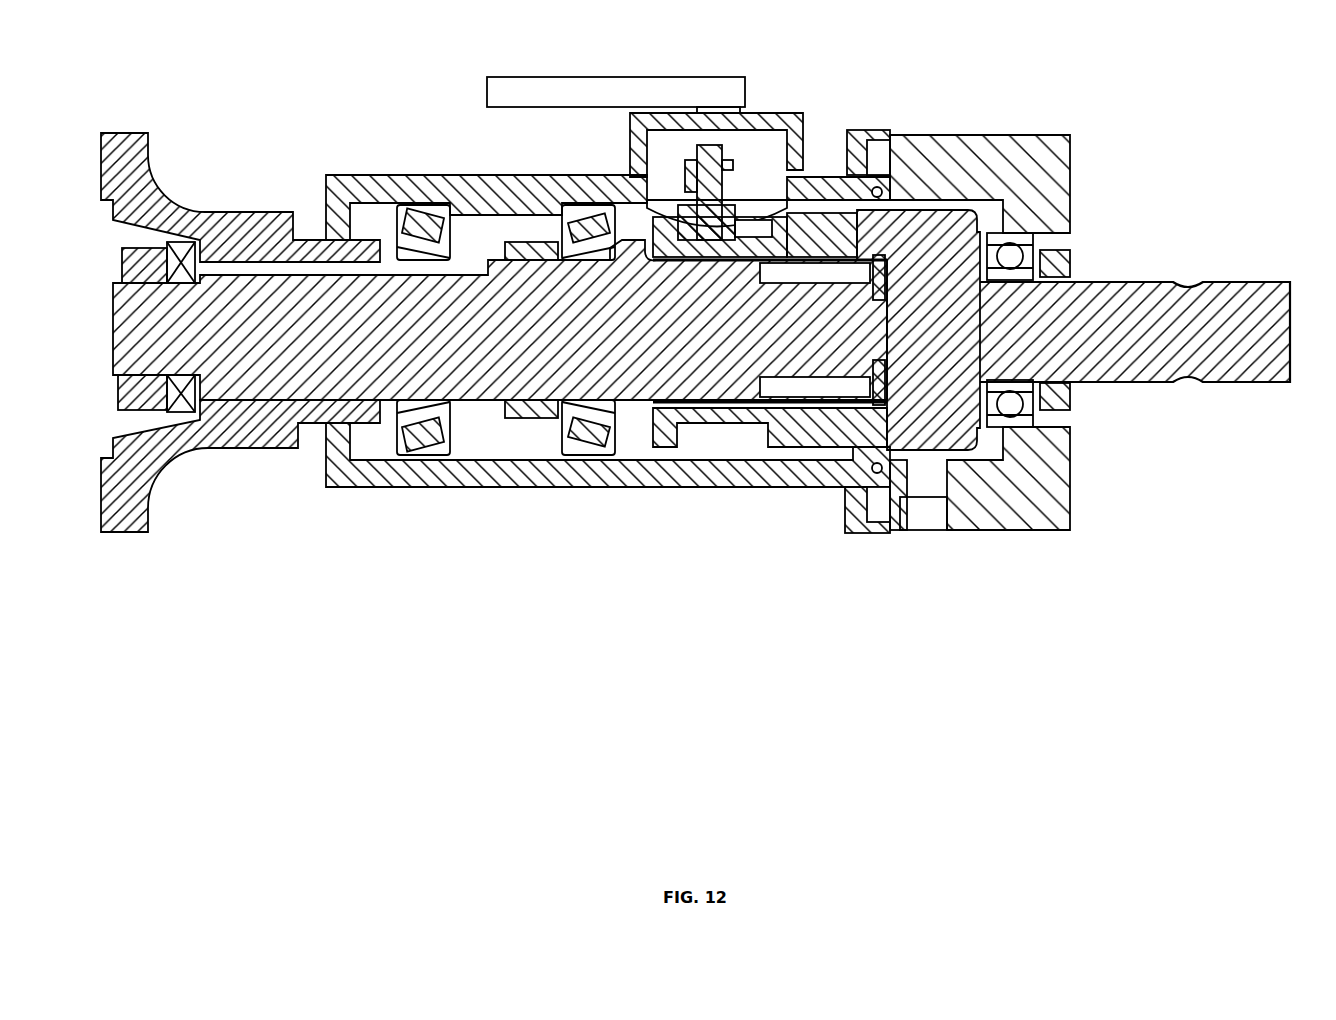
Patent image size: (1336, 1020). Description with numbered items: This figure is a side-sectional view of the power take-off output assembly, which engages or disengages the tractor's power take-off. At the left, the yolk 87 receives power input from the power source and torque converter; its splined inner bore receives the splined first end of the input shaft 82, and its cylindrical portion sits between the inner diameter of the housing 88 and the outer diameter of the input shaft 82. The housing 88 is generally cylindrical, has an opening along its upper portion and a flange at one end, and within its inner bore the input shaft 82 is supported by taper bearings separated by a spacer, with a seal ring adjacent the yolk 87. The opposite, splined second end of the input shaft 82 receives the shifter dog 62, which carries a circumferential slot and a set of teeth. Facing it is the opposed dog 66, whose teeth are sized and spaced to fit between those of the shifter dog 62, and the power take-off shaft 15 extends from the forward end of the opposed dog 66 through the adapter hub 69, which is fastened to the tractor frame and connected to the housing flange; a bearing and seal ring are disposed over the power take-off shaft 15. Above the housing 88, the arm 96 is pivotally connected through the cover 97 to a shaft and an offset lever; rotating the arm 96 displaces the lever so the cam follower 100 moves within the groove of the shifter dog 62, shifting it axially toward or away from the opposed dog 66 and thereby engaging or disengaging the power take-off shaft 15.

The power take-off shaft 15 is at (1262, 282).
The shifter dog 62 is at (793, 437).
The opposed dog 66 is at (920, 230).
The adapter hub 69 is at (1010, 135).
The input shaft 82 is at (475, 373).
The yolk 87 is at (130, 133).
The housing 88 is at (383, 175).
The arm 96 is at (557, 77).
The cover 97 is at (807, 123).
The cam follower 100 is at (737, 212).